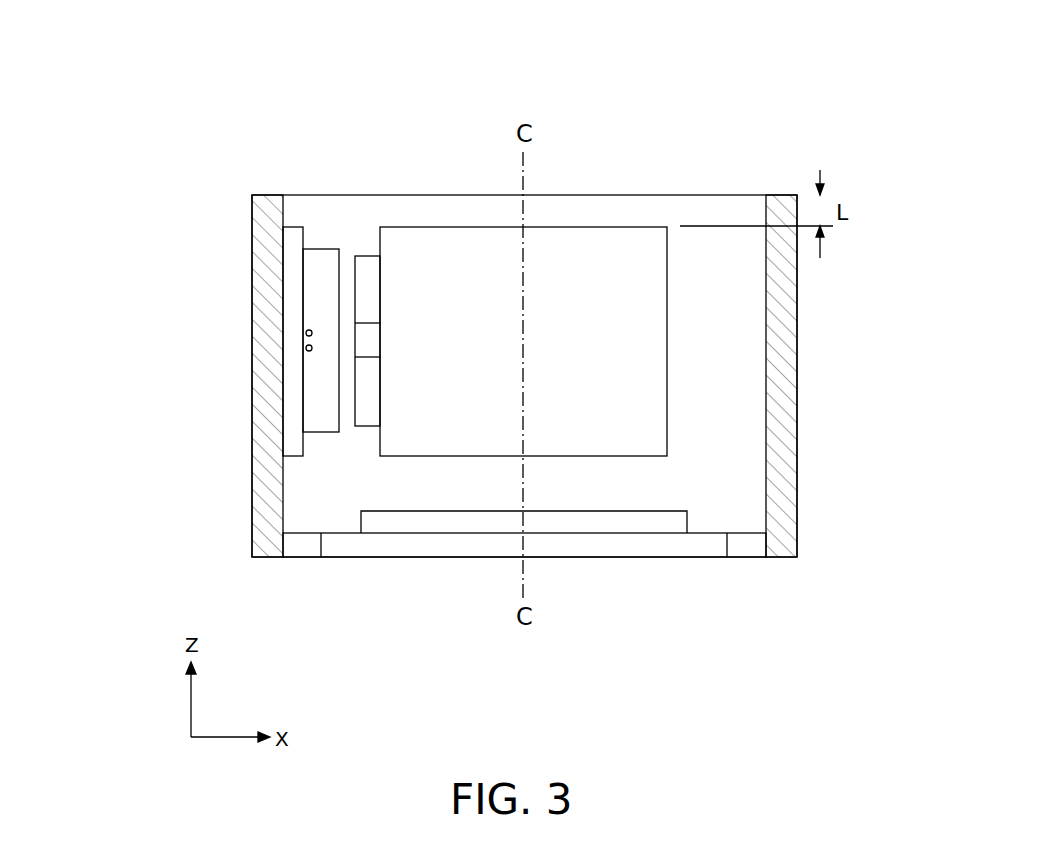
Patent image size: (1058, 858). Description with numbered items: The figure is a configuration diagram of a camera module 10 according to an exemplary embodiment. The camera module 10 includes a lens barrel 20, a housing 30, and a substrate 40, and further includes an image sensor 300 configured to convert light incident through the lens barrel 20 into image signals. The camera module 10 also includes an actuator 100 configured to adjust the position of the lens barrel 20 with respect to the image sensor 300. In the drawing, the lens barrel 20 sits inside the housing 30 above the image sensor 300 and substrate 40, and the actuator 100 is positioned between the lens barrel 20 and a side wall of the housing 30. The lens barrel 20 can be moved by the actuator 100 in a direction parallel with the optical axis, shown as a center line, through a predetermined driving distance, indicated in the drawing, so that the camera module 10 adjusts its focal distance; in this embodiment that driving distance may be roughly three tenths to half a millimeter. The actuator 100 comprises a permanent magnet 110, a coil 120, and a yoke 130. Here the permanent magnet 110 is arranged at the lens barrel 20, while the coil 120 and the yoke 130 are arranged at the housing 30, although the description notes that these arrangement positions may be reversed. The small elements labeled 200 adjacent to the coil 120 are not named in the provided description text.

The camera module 10 is at (697, 90).
The lens barrel 20 is at (663, 330).
The housing 30 is at (787, 437).
The substrate 40 is at (457, 548).
The actuator 100 is at (403, 104).
The permanent magnet 110 is at (368, 262).
The coil 120 is at (322, 255).
The yoke 130 is at (293, 230).
The wiring / conductors 200 is at (305, 333).
The image sensor 300 is at (389, 521).